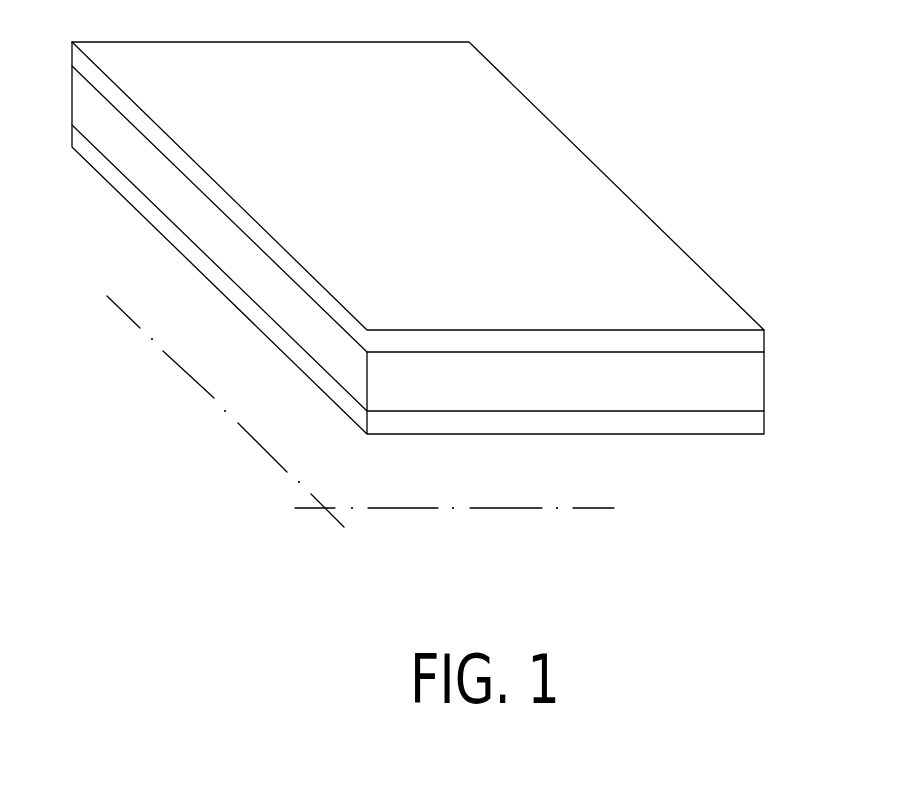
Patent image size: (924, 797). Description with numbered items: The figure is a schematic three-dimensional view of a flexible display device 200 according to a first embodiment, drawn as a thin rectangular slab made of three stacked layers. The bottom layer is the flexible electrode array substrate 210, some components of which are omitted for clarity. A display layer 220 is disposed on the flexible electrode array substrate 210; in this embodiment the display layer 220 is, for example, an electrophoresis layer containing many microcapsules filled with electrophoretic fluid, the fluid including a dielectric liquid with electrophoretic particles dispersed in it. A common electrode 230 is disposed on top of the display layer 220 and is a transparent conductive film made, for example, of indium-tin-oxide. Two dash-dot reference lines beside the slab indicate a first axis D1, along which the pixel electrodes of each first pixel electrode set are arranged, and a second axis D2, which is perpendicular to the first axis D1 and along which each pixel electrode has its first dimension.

The flexible display device 200 is at (490, 282).
The flexible electrode array substrate 210 is at (772, 424).
The display layer 220 is at (772, 382).
The common electrode 230 is at (772, 340).
The first axis D1 is at (185, 375).
The second axis D2 is at (527, 509).